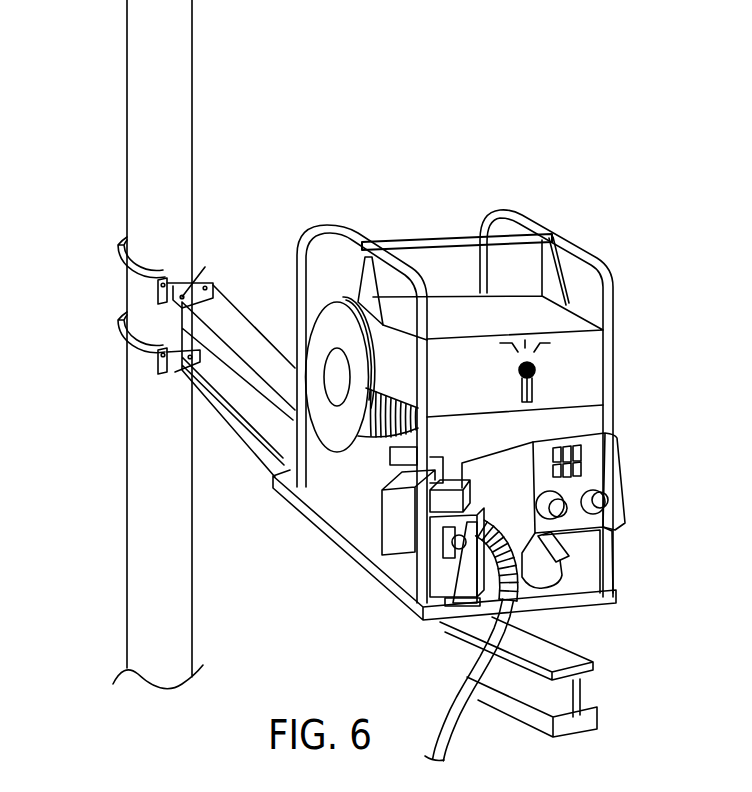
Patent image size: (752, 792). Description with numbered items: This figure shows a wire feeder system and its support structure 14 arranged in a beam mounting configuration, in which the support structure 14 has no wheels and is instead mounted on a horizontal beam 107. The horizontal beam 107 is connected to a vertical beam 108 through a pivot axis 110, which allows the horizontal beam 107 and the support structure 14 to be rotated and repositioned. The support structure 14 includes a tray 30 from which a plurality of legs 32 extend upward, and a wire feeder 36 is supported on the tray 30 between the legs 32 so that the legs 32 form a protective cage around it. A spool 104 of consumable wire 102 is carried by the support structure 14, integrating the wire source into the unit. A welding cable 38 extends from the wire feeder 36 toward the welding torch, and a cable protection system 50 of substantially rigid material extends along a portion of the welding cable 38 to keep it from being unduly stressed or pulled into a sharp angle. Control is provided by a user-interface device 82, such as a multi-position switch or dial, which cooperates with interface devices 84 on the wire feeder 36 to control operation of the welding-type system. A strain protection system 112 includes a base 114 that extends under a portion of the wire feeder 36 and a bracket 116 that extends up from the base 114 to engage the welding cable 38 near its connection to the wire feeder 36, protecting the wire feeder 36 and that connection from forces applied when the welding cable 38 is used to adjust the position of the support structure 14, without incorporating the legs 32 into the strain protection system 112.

The support structure 14 is at (563, 224).
The tray 30 is at (617, 600).
The legs 32 is at (296, 247).
The wire feeder 36 is at (625, 418).
The welding cable 38 is at (478, 674).
The cable protection system 50 is at (532, 624).
The user-interface device 82 is at (533, 392).
The interface devices 84 is at (600, 474).
The consumable wire 102 is at (378, 440).
The spool 104 is at (340, 427).
The horizontal beam 107 is at (467, 617).
The vertical beam 108 is at (170, 573).
The pivot axis 110 is at (202, 267).
The strain protection system 112 is at (447, 595).
The base 114 is at (398, 567).
The bracket 116 is at (440, 610).